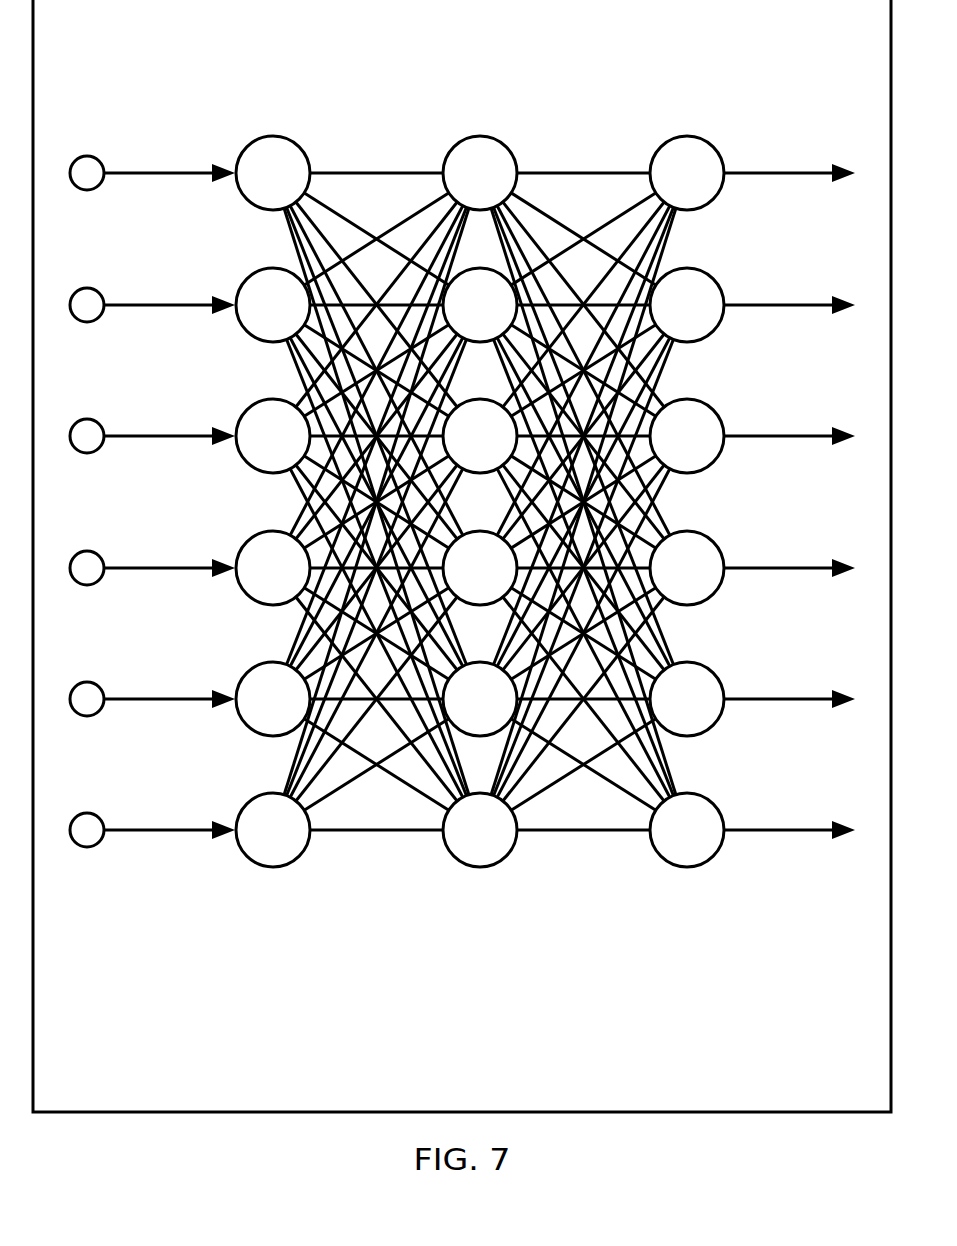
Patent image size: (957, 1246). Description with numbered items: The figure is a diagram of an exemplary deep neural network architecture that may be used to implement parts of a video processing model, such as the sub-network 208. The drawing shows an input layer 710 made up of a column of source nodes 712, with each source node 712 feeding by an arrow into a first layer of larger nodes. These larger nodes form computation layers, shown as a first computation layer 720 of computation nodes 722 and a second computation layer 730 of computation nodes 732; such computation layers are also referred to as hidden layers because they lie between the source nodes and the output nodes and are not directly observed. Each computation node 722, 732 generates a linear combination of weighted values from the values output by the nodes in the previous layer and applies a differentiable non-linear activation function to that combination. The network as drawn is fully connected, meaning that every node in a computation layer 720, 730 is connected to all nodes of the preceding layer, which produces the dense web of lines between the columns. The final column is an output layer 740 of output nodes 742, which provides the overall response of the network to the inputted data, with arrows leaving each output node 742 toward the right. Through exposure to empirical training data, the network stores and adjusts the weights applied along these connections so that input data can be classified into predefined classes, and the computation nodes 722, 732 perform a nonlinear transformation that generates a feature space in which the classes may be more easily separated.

The sub-network 208 is at (484, 1097).
The input layer 710 is at (154, 522).
The input node 712 is at (87, 838).
The first hidden layer 720 is at (331, 521).
The hidden layer node 722 is at (273, 857).
The second hidden layer 730 is at (538, 521).
The hidden layer node 732 is at (480, 857).
The output layer 740 is at (752, 521).
The output node 742 is at (687, 857).